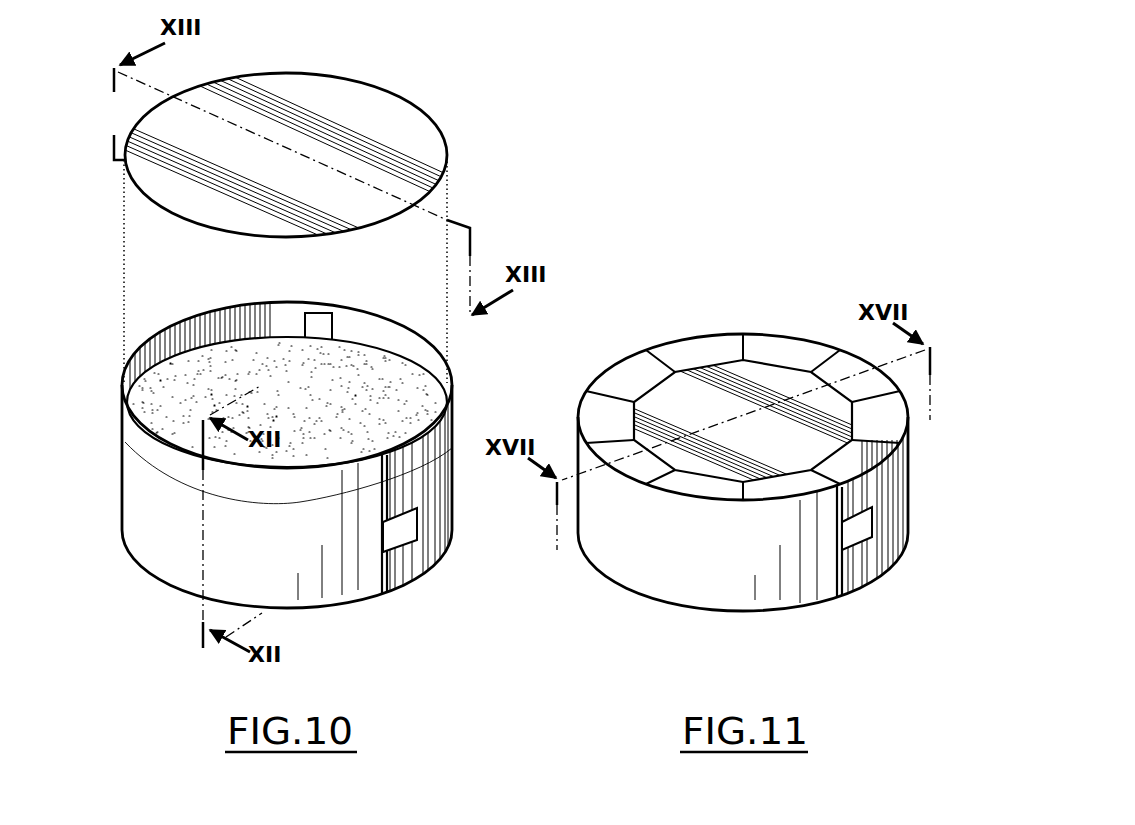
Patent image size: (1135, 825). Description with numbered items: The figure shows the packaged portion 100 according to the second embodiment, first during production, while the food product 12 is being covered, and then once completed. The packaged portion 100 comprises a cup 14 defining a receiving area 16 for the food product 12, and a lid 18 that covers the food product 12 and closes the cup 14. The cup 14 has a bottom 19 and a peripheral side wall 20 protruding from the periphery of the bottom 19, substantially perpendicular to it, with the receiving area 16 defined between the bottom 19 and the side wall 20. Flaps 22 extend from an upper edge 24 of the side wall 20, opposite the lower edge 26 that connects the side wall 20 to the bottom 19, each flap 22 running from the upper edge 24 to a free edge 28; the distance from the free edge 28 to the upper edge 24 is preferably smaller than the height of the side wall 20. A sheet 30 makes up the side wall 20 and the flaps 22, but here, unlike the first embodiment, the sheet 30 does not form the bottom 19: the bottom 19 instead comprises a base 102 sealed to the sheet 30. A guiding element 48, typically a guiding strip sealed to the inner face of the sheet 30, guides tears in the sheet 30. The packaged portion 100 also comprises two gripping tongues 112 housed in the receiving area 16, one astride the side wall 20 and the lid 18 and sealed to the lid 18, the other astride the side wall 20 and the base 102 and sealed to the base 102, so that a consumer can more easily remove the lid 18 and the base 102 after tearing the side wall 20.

In FIG. 10, the packaged portion 100 is at (283, 356).
In FIG. 11, the packaged portion 100 is at (760, 435).
In FIG. 10, the food product 12 is at (295, 370).
In FIG. 10, the cup 14 is at (120, 462).
In FIG. 10, the receiving area 16 is at (124, 386).
In FIG. 10, the lid 18 is at (370, 105).
In FIG. 11, the lid 18 is at (775, 380).
In FIG. 10, the bottom 19 is at (312, 610).
In FIG. 11, the bottom 19 is at (815, 600).
In FIG. 10, the side wall 20 is at (145, 484).
In FIG. 11, the side wall 20 is at (663, 572).
In FIG. 10, the flap 22 is at (365, 333).
In FIG. 11, the flap 22 is at (690, 355).
In FIG. 10, the upper edge 24 is at (185, 352).
In FIG. 11, the upper edge 24 is at (890, 458).
In FIG. 10, the lower edge 26 is at (150, 575).
In FIG. 11, the lower edge 26 is at (612, 578).
In FIG. 10, the free edge 28 is at (453, 348).
In FIG. 11, the free edge 28 is at (682, 472).
In FIG. 10, the sheet 30 is at (156, 517).
In FIG. 11, the sheet 30 is at (892, 492).
In FIG. 10, the guiding element 48 is at (405, 538).
In FIG. 11, the guiding element 48 is at (862, 537).
In FIG. 10, the base 102 is at (445, 553).
In FIG. 11, the base 102 is at (710, 610).
In FIG. 10, the gripping tongue 112 is at (320, 312).